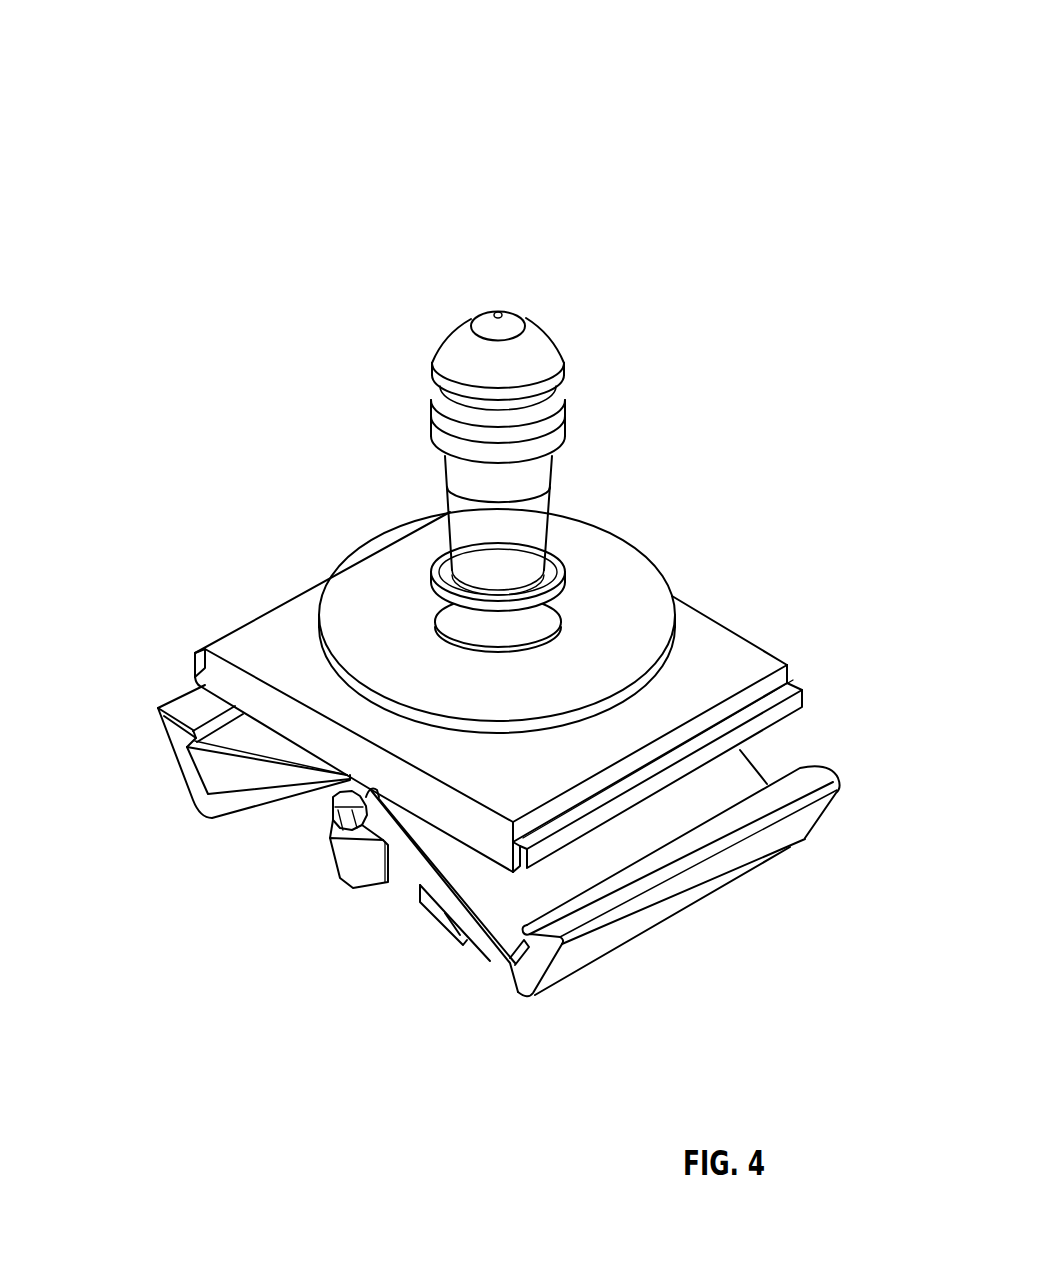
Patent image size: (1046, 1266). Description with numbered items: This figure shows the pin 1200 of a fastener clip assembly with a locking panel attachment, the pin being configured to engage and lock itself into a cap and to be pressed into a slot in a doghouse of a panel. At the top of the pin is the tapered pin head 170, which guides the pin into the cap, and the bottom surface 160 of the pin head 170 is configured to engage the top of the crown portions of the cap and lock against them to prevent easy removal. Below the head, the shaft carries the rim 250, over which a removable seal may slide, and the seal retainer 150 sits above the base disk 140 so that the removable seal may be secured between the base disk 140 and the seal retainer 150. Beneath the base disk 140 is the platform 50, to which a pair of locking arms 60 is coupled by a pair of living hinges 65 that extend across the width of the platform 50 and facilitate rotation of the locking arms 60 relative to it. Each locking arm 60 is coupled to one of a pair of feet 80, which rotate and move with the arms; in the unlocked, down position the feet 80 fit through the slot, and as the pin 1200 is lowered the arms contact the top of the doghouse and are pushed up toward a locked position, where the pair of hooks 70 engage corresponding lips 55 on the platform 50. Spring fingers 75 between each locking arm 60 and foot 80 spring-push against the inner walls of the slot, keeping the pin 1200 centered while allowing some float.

The pin 1200 is at (803, 108).
The platform 50 is at (747, 672).
The lips 55 is at (758, 717).
The locking arms 60 is at (647, 912).
The living hinges 65 is at (338, 797).
The hooks 70 is at (803, 790).
The spring fingers 75 is at (352, 800).
The feet 80 is at (352, 847).
The base disk 140 is at (600, 648).
The seal retainer 150 is at (546, 583).
The bottom surface of the pin head 160 is at (556, 395).
The pin head 170 is at (525, 355).
The rim 250 is at (500, 540).